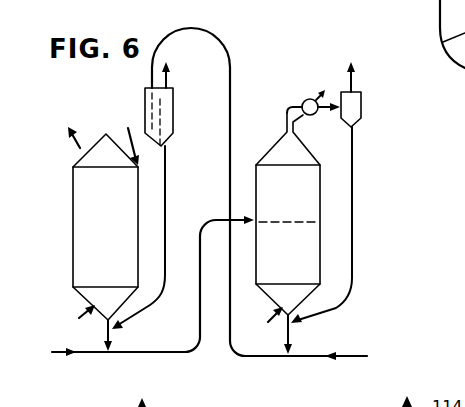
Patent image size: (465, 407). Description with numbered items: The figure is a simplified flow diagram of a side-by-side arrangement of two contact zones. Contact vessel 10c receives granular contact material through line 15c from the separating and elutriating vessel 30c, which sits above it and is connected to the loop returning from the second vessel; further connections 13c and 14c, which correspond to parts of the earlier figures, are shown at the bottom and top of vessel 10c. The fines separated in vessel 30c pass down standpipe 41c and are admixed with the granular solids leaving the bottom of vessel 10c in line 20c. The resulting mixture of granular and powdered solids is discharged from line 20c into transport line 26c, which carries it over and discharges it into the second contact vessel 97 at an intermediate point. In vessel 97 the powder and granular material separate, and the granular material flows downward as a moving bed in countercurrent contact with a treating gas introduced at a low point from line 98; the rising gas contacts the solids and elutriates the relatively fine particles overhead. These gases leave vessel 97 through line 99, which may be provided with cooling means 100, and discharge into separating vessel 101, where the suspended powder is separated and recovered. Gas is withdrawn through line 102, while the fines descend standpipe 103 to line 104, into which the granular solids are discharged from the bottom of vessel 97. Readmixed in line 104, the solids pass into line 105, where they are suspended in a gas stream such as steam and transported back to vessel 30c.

The contact vessel 10c is at (73, 222).
The fluidizing gas inlet to first reactor 13c is at (79, 318).
The gas outlet from first reactor 14c is at (80, 148).
The line 15c is at (124, 137).
The line 20c is at (112, 337).
The transport line 26c is at (163, 354).
The separating and elutriating vessel 30c is at (175, 108).
The standpipe 41c is at (168, 176).
The contact vessel 97 is at (265, 158).
The line 98 is at (268, 322).
The line 99 is at (286, 113).
The cooling means 100 is at (315, 116).
The separating vessel 101 is at (362, 108).
The line 102 is at (353, 83).
The standpipe 103 is at (354, 200).
The line 104 is at (292, 338).
The line 105 is at (302, 357).